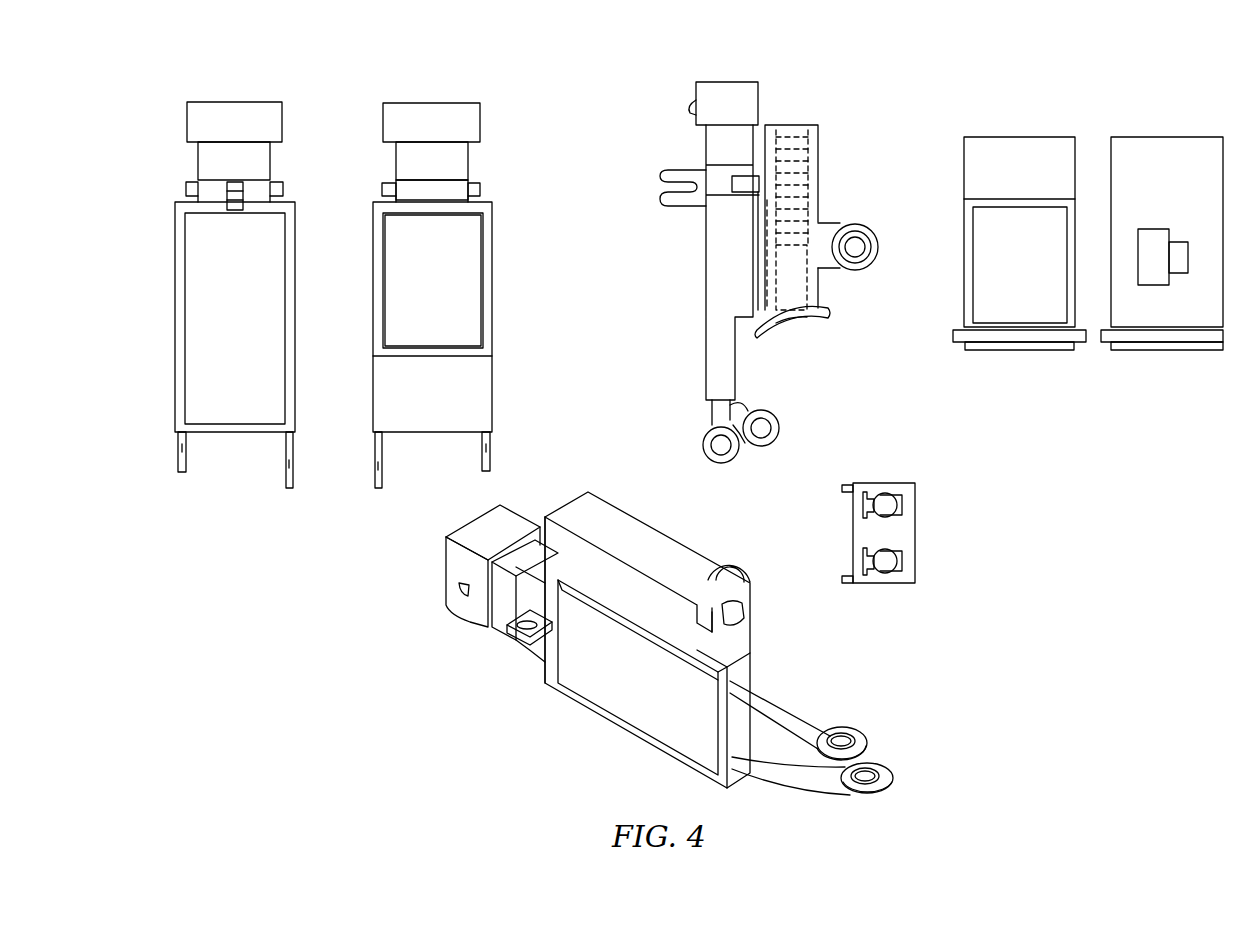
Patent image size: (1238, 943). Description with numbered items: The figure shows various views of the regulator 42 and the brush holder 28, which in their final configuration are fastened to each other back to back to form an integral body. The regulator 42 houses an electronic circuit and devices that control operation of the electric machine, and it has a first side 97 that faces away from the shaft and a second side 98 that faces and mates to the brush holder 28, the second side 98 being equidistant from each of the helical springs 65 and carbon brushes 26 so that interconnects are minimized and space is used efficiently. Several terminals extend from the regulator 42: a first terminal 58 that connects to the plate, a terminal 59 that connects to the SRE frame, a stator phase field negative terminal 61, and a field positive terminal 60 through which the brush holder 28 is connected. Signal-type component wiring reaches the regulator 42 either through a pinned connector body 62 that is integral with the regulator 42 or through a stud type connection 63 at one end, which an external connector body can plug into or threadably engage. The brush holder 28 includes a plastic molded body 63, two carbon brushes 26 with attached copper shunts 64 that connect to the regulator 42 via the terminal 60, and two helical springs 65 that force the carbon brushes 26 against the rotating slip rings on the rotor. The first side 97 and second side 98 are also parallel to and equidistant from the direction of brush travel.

The carbon brushes 26 is at (793, 335).
The brush holder 28 is at (783, 125).
The regulator 42 is at (712, 142).
The first terminal 58 is at (855, 734).
The terminal 59 is at (880, 763).
The field positive (F+) terminal 60 is at (381, 185).
The stator phase field negative (F−) terminal 61 is at (284, 189).
The pinned connector body 62 is at (433, 102).
The stud type connection 63 is at (820, 132).
The copper shunts 64 is at (755, 226).
The helical springs 65 is at (805, 160).
The first side 97 is at (632, 702).
The second side 98 is at (472, 315).